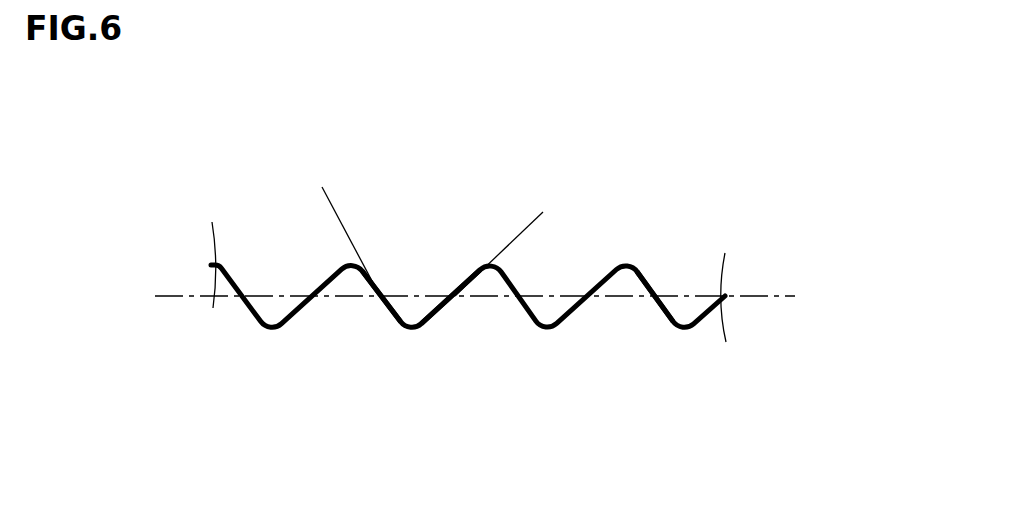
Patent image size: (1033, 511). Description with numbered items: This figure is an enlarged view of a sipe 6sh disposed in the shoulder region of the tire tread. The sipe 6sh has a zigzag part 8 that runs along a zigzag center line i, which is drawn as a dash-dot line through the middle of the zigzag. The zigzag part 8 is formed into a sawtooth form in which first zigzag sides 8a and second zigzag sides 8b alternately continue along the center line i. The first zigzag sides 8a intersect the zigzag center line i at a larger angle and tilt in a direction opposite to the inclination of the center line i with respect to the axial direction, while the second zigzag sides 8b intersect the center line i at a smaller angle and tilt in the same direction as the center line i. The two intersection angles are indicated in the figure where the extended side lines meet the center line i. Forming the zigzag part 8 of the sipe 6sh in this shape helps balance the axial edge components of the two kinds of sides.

The zigzag part 8 is at (456, 193).
The first zigzag sides 8a is at (373, 288).
The second zigzag sides 8b is at (438, 308).
The sipe 6sh is at (652, 280).
The zigzag center line i is at (622, 297).